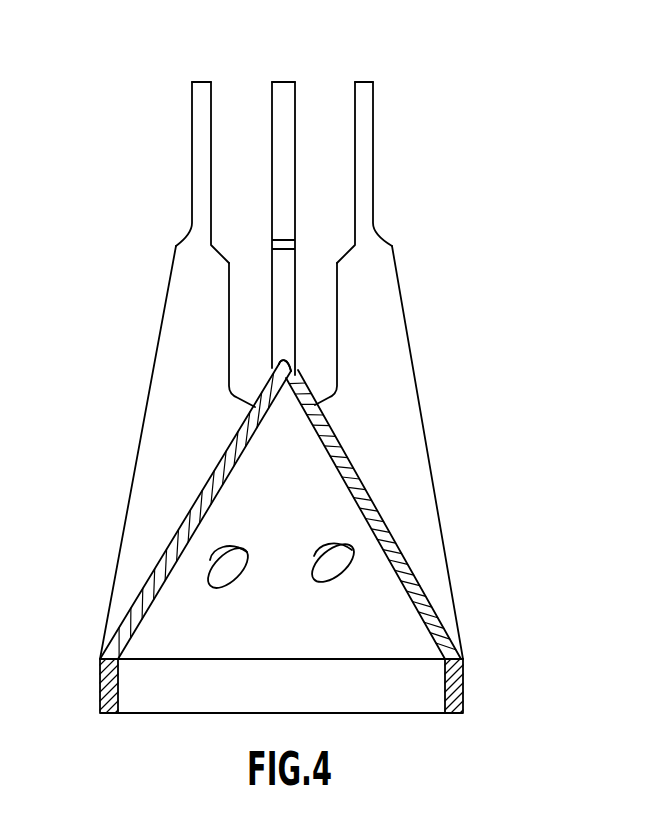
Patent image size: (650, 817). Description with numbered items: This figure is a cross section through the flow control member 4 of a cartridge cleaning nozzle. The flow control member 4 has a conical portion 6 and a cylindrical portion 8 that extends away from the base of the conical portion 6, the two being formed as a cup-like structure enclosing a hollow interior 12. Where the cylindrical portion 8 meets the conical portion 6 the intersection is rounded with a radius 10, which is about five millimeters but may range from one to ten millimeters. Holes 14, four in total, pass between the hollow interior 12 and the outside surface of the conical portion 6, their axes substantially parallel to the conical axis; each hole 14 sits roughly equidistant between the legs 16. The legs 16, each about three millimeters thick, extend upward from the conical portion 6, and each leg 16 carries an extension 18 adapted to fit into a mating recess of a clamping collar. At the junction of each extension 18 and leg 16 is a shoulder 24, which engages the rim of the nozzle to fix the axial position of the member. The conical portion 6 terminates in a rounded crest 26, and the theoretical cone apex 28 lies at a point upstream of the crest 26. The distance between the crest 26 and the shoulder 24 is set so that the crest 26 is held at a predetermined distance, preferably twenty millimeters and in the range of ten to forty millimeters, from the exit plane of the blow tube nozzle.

The flow control member 4 is at (492, 165).
The conical portion 6 is at (168, 550).
The cylindrical portion 8 is at (100, 690).
The radius 10 is at (100, 660).
The hollow interior 12 is at (300, 649).
The holes 14 is at (250, 565).
The legs 16 is at (281, 452).
The extension 18 is at (203, 106).
The shoulder 24 is at (218, 254).
The rounded crest 26 is at (292, 377).
The theoretical cone apex 28 is at (285, 365).